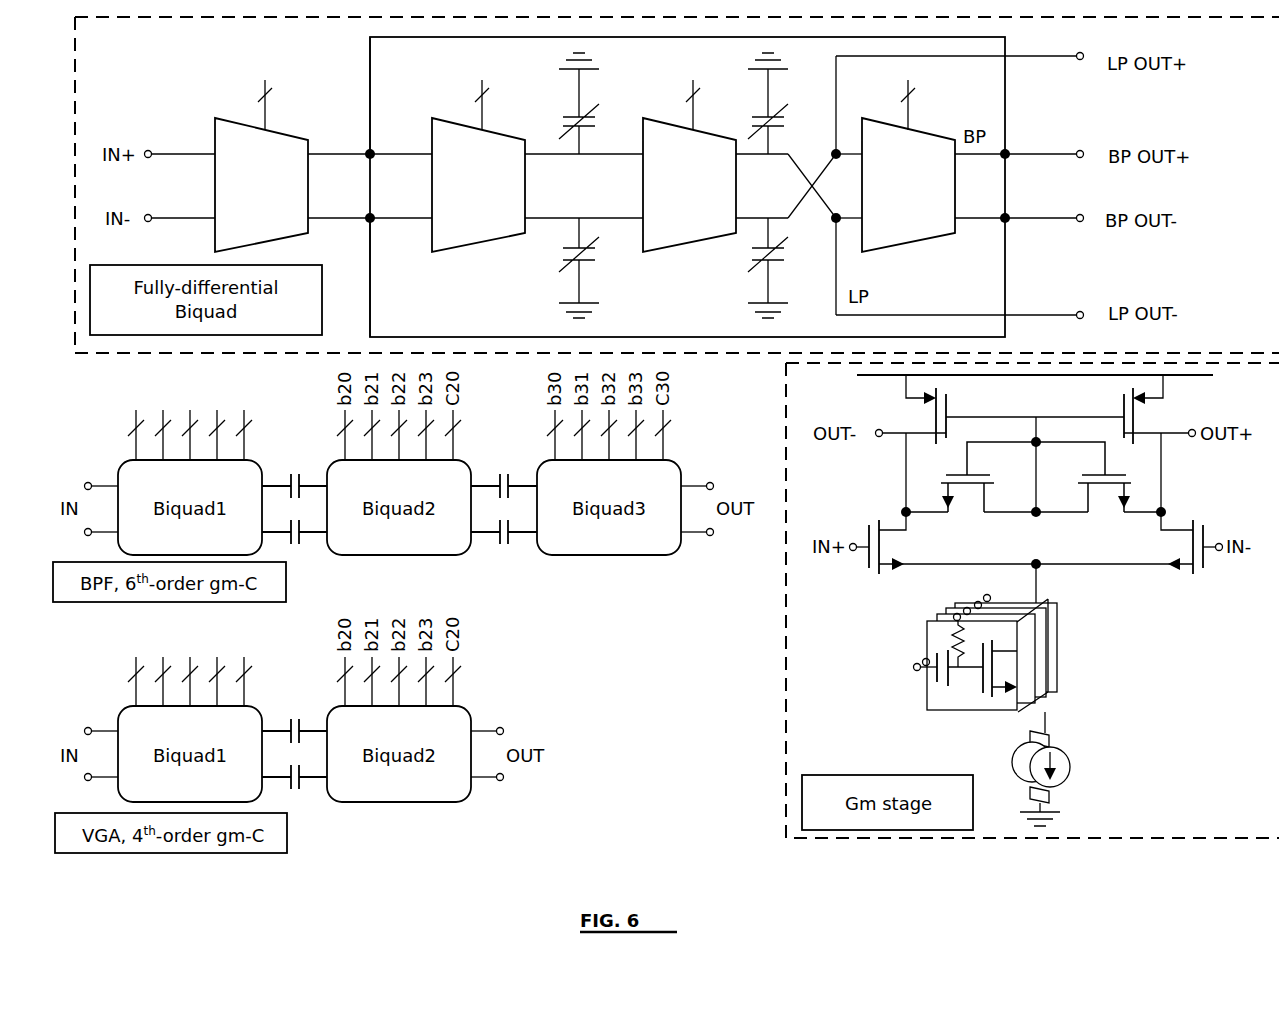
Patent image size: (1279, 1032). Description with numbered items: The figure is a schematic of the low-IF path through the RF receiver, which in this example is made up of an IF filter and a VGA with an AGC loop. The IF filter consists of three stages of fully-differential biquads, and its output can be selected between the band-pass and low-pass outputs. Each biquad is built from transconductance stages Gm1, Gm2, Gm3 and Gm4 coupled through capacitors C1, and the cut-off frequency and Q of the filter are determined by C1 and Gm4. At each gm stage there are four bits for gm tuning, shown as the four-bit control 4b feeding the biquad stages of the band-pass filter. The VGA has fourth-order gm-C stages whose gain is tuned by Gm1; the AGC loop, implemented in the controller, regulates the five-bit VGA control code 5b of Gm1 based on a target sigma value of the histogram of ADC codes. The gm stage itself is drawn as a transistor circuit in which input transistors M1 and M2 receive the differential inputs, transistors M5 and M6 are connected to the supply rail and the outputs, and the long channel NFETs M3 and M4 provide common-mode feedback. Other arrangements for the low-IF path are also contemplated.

The Gm1 gm stage Gm1 is at (261, 158).
The Gm2 gm stage Gm2 is at (478, 158).
The Gm3 gm stage Gm3 is at (689, 158).
The Gm4 gm stage Gm4 is at (908, 158).
The capacitor C1 is at (673, 185).
The 4-bit gm tuning control 4b is at (172, 415).
The 5-bit VGA control code 5b is at (172, 661).
The transistor M1 is at (943, 543).
The transistor M2 is at (1129, 543).
The long channel NFET M3 is at (971, 477).
The long channel NFET M4 is at (1098, 477).
The transistor M5 is at (944, 409).
The transistor M6 is at (1123, 409).